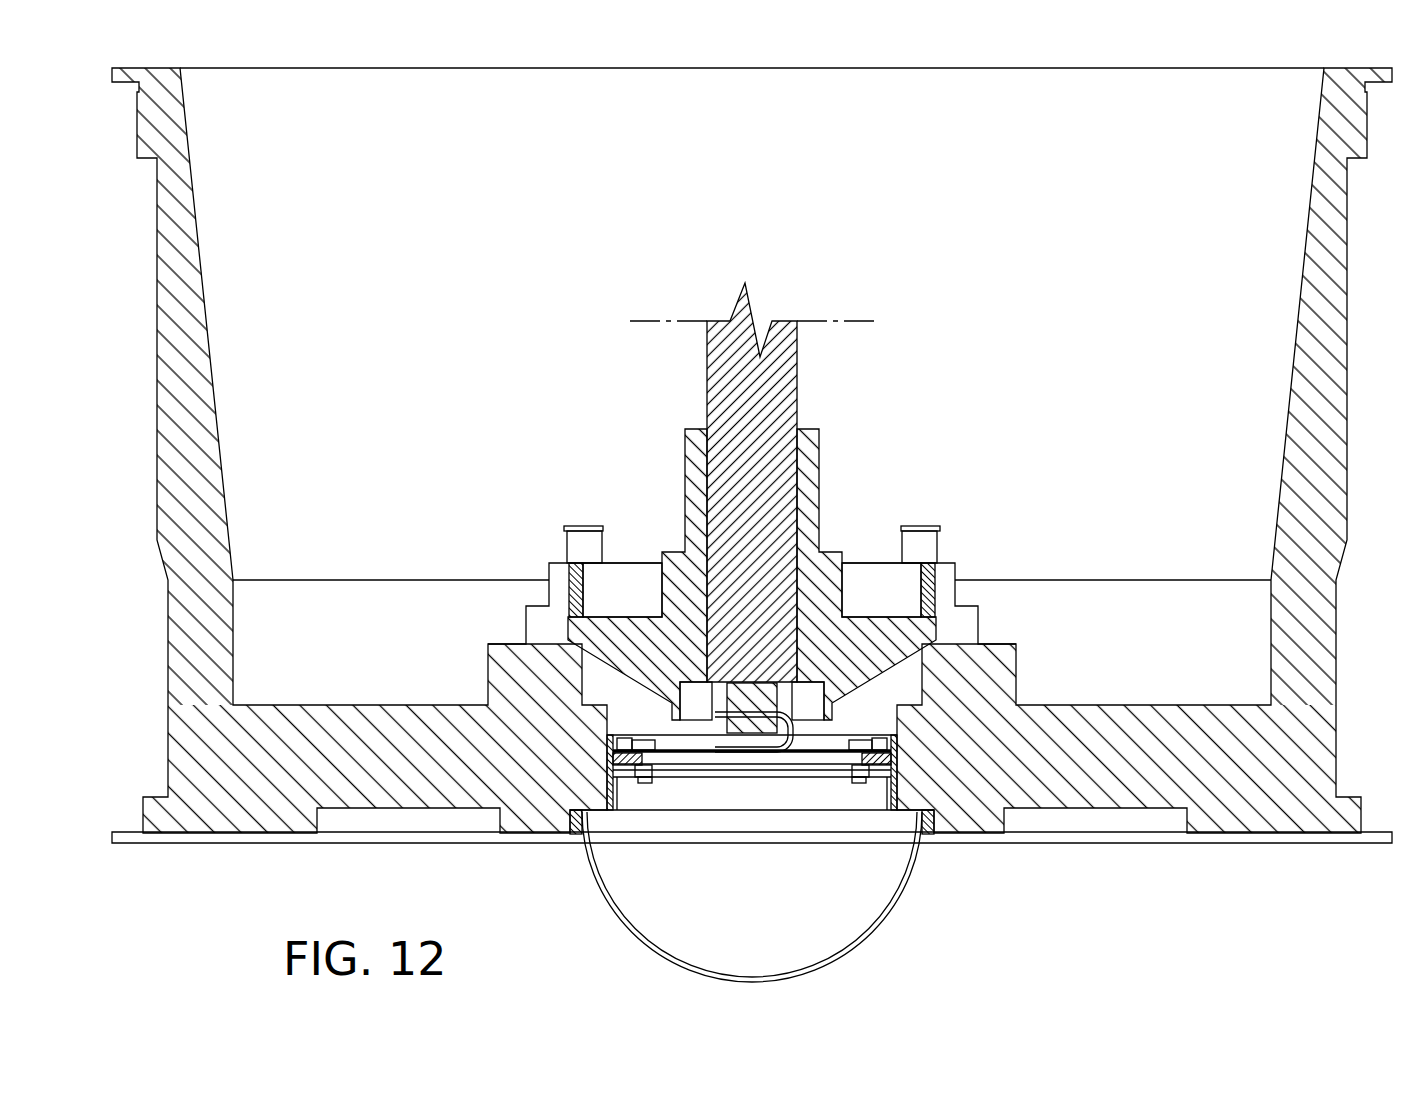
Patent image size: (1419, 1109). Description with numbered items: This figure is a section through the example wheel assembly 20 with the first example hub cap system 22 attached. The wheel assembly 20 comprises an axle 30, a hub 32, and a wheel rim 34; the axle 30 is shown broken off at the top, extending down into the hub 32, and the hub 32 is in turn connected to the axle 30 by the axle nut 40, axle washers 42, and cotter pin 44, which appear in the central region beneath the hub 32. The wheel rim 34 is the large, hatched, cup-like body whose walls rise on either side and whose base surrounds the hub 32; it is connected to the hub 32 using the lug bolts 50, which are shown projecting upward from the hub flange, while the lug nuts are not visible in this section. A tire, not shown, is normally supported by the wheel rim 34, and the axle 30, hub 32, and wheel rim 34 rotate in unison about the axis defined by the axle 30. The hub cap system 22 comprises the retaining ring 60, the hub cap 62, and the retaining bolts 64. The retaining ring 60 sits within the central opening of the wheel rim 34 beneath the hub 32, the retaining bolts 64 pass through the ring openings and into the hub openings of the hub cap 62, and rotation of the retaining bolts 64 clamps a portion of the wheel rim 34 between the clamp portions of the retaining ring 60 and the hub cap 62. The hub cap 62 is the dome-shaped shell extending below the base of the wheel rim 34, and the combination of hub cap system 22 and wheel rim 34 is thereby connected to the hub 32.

The wheel assembly 20 is at (1140, 890).
The hub cap system 22 is at (589, 918).
The axle 30 is at (788, 360).
The hub 32 is at (828, 570).
The wheel rim 34 is at (196, 420).
The axle nut 40 is at (793, 714).
The axle washers 42 is at (713, 692).
The cotter pin 44 is at (742, 754).
The lug bolts 50 is at (587, 543).
The retaining ring 60 is at (610, 735).
The hub cap 62 is at (885, 898).
The retaining bolts 64 is at (640, 750).